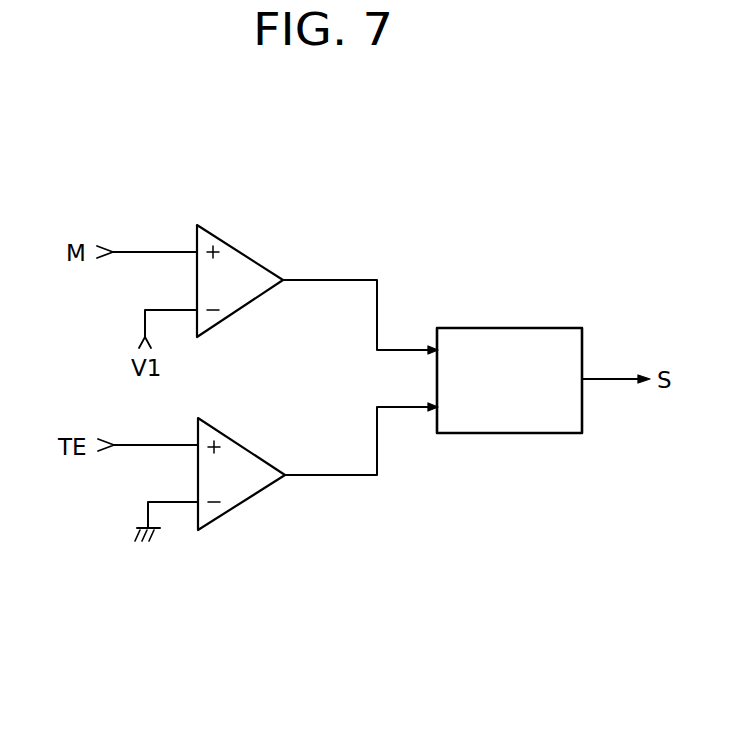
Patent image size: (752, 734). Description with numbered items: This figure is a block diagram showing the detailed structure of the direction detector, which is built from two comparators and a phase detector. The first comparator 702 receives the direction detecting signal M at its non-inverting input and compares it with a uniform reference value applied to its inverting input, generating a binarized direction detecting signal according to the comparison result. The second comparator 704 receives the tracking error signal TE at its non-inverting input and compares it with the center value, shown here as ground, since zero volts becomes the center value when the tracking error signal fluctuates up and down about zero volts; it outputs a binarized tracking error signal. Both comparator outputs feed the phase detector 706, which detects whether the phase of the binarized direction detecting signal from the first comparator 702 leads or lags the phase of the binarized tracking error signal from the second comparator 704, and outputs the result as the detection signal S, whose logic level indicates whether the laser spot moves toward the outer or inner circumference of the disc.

The first comparator 702 is at (245, 251).
The second comparator 704 is at (246, 446).
The phase detector 706 is at (510, 328).